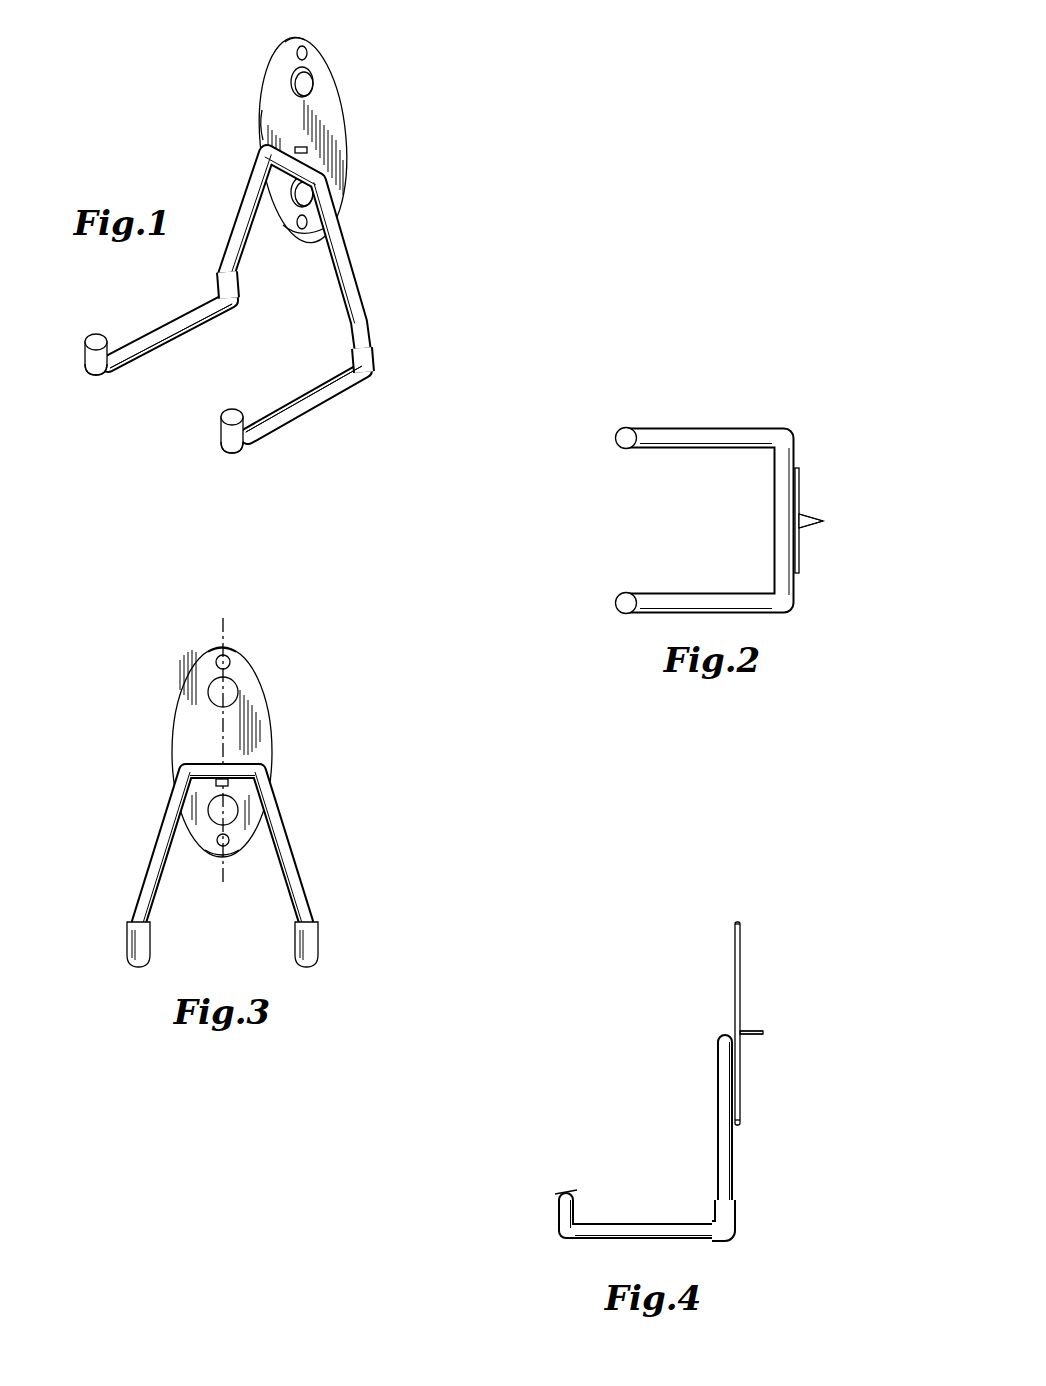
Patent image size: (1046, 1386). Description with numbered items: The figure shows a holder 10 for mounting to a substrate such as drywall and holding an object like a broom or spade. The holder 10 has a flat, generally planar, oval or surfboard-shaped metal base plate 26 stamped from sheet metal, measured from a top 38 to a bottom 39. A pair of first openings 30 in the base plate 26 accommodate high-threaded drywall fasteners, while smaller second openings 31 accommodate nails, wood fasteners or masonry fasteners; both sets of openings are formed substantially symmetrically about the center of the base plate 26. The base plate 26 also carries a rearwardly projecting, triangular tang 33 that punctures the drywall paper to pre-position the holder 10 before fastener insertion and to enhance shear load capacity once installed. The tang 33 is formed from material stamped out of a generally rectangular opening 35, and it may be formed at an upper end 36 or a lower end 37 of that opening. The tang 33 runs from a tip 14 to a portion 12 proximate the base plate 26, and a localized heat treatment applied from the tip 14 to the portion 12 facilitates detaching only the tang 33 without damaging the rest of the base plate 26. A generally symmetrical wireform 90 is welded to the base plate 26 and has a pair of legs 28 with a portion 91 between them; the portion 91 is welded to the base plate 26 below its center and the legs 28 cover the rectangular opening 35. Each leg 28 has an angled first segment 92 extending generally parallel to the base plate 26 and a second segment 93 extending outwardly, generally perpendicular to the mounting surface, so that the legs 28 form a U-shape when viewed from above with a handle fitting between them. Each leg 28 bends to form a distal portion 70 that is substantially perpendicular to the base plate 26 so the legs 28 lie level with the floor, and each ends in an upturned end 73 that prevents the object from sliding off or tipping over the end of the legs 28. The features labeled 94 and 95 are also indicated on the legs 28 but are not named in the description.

In FIG. 1, the holder 10 is at (379, 100).
In FIG. 2, the portion 12 is at (804, 529).
In FIG. 4, the portion 12 is at (745, 1035).
In FIG. 2, the tip 14 is at (825, 522).
In FIG. 4, the tip 14 is at (764, 1033).
In FIG. 1, the base plate 26 is at (265, 104).
In FIG. 2, the base plate 26 is at (800, 480).
In FIG. 3, the base plate 26 is at (256, 696).
In FIG. 4, the base plate 26 is at (734, 960).
In FIG. 1, the legs 28 is at (282, 332).
In FIG. 3, the legs 28 is at (220, 824).
In FIG. 1, the first openings 30 is at (291, 81).
In FIG. 3, the first openings 30 is at (208, 692).
In FIG. 1, the second openings 31 is at (297, 52).
In FIG. 3, the second openings 31 is at (216, 660).
In FIG. 2, the tang 33 is at (823, 518).
In FIG. 4, the tang 33 is at (762, 1030).
In FIG. 1, the generally rectangular opening 35 is at (266, 130).
In FIG. 3, the upper end 36 is at (213, 757).
In FIG. 1, the lower end 37 is at (301, 150).
In FIG. 3, the lower end 37 is at (213, 783).
In FIG. 1, the top 38 is at (299, 37).
In FIG. 3, the top 38 is at (225, 647).
In FIG. 4, the top 38 is at (738, 922).
In FIG. 1, the bottom 39 is at (318, 236).
In FIG. 3, the bottom 39 is at (215, 858).
In FIG. 4, the bottom 39 is at (740, 1125).
In FIG. 1, the distal portion 70 is at (110, 377).
In FIG. 1, the upturned end 73 is at (88, 350).
In FIG. 2, the upturned end 73 is at (615, 437).
In FIG. 3, the upturned end 73 is at (130, 935).
In FIG. 4, the upturned end 73 is at (556, 1208).
In FIG. 1, the wireform 90 is at (375, 333).
In FIG. 1, the portion 91 is at (318, 172).
In FIG. 3, the portion 91 is at (255, 758).
In FIG. 1, the first segment 92 is at (240, 196).
In FIG. 3, the first segment 92 is at (170, 820).
In FIG. 4, the first segment 92 is at (735, 1160).
In FIG. 1, the second segment 93 is at (157, 368).
In FIG. 2, the second segment 93 is at (700, 427).
In FIG. 4, the second segment 93 is at (640, 1222).
In FIG. 1, the bend 94 is at (238, 300).
In FIG. 4, the bend 94 is at (735, 1228).
In FIG. 1, the top surface 95 is at (170, 320).